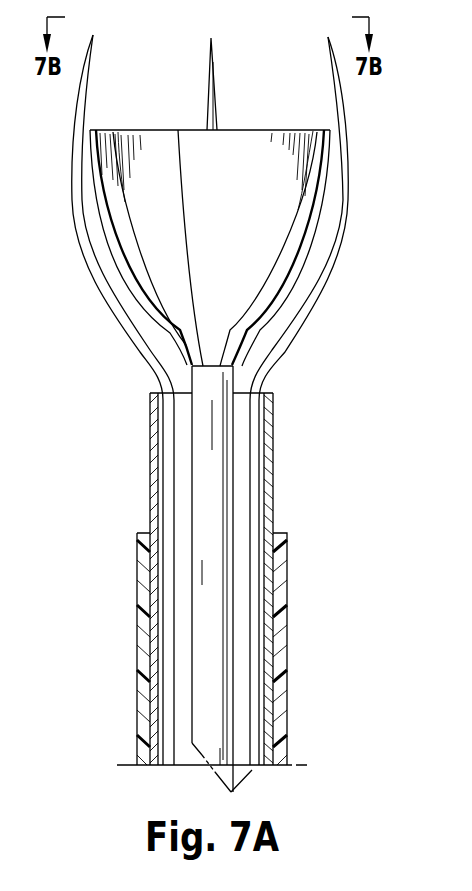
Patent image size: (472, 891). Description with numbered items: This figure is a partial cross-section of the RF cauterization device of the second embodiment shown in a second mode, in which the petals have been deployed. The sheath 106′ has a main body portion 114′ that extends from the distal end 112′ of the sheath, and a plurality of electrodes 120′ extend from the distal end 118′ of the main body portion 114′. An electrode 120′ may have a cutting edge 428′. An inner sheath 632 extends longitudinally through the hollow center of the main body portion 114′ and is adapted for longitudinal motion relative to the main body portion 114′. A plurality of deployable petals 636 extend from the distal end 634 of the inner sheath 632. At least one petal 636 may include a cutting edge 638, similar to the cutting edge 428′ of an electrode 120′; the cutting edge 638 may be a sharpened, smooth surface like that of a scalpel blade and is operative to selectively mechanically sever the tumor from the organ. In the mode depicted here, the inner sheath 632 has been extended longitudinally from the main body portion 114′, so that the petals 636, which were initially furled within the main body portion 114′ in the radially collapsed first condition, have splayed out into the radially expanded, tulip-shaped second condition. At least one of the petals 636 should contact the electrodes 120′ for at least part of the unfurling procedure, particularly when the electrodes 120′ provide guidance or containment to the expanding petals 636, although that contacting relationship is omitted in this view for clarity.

The electrode 120′ is at (229, 400).
The cutting edge 428′ is at (346, 232).
The deployable petal 636 is at (135, 170).
The cutting edge 638 is at (180, 188).
The distal end of main body portion 118′ is at (305, 401).
The distal end of inner sheath 634 is at (134, 433).
The main body portion 114′ is at (273, 445).
The inner sheath 632 is at (207, 497).
The distal end of sheath 112′ is at (318, 577).
The sheath 106′ is at (275, 700).